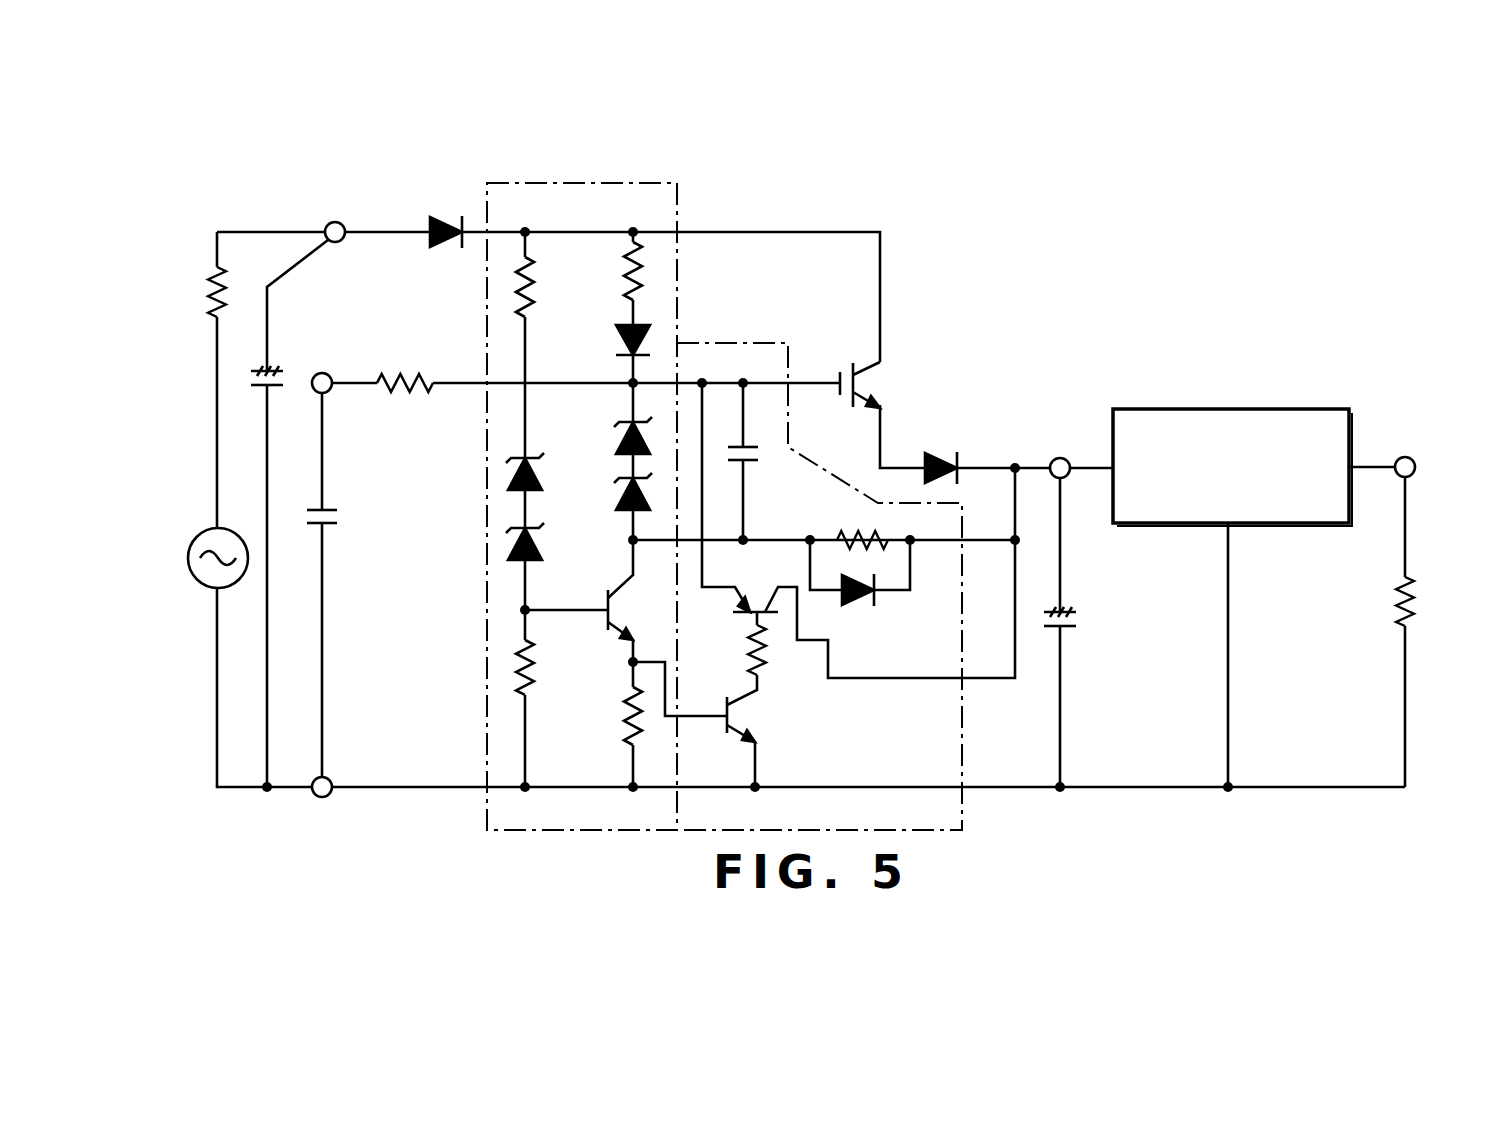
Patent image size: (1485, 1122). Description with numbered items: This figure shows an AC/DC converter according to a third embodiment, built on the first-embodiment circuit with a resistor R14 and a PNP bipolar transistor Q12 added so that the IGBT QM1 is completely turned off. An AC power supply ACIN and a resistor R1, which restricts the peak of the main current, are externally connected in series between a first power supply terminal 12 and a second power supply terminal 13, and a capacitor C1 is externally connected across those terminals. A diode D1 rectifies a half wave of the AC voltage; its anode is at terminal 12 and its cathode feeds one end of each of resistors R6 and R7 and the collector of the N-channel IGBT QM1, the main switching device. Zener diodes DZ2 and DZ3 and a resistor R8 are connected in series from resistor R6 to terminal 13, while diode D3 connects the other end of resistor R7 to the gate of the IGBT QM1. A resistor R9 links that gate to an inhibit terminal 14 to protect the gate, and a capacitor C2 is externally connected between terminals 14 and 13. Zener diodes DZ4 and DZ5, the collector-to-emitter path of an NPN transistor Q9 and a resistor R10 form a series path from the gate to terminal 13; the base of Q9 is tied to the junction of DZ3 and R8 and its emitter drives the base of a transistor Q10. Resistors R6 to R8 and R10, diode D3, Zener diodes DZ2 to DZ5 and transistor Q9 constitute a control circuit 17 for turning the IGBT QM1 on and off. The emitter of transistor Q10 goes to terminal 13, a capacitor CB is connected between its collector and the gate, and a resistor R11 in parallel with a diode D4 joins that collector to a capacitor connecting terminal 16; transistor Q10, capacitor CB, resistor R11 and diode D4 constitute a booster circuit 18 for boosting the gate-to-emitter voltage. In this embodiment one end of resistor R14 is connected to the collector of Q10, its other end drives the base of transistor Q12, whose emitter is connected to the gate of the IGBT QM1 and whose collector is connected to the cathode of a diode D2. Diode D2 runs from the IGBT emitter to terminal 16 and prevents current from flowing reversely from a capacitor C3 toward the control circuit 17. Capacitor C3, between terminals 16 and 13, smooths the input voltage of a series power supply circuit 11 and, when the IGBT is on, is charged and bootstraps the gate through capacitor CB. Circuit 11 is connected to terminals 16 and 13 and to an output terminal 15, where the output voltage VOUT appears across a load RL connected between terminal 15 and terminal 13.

The series power supply circuit 11 is at (1283, 408).
The first power supply terminal 12 is at (336, 222).
The second power supply terminal 13 is at (325, 797).
The inhibit terminal 14 is at (322, 373).
The output terminal 15 is at (1401, 456).
The capacitor connecting terminal 16 is at (1060, 458).
The control circuit 17 is at (620, 183).
The booster circuit 18 is at (760, 343).
The resistor R1 is at (205, 296).
The capacitor C1 is at (253, 383).
The capacitor C2 is at (304, 524).
The resistor R9 is at (407, 370).
The diode D1 is at (444, 217).
The resistor R6 is at (539, 288).
The resistor R7 is at (621, 280).
The diode D3 is at (616, 342).
The Zener diode DZ2 is at (508, 472).
The Zener diode DZ3 is at (508, 542).
The Zener diode DZ4 is at (615, 435).
The Zener diode DZ5 is at (616, 496).
The NPN bipolar transistor Q9 is at (600, 600).
The resistor R8 is at (537, 668).
The resistor R10 is at (624, 718).
The capacitor CB is at (761, 456).
The PNP bipolar transistor Q12 is at (762, 600).
The resistor R14 is at (750, 658).
The NPN bipolar transistor Q10 is at (758, 716).
The resistor R11 is at (850, 528).
The diode D4 is at (855, 600).
The N-channel IGBT QM1 is at (862, 384).
The diode D2 is at (949, 456).
The capacitor C3 is at (1076, 608).
The load RL is at (1415, 600).
The AC power supply ACIN is at (190, 547).
The output voltage VOUT is at (1454, 464).